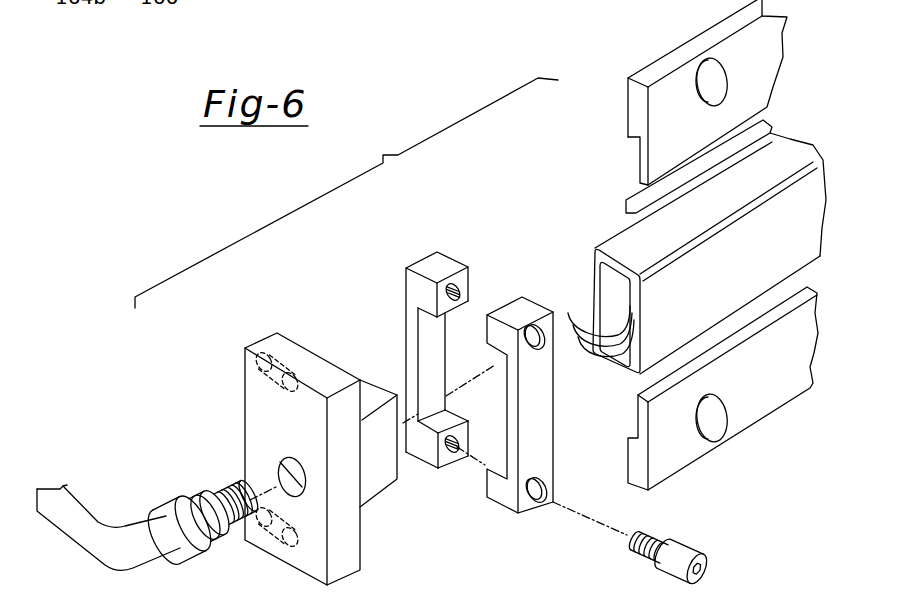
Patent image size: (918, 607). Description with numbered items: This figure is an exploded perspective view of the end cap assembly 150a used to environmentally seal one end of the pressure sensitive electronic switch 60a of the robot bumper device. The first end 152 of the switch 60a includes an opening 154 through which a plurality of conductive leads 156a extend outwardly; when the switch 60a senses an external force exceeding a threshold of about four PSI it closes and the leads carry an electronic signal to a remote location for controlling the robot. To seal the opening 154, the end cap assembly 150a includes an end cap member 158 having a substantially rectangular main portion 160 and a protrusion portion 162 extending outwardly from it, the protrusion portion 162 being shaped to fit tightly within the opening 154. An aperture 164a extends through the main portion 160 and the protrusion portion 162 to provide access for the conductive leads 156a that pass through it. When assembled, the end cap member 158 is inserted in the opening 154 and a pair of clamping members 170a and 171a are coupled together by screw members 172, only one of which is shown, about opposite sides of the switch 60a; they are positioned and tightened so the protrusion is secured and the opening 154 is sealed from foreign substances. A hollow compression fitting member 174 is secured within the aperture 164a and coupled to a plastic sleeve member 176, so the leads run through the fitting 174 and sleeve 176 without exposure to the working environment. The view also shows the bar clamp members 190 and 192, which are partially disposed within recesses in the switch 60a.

The switch 60a is at (600, 196).
The end cap assembly 150a is at (346, 193).
The first end 152 is at (587, 234).
The opening 154 is at (621, 348).
The conductive leads 156a is at (571, 318).
The end cap member 158 is at (273, 439).
The main portion 160 is at (292, 358).
The protrusion portion 162 is at (377, 397).
The aperture 164a is at (280, 468).
The clamping member 170a is at (444, 262).
The clamping member 171a is at (557, 288).
The screw member 172 is at (725, 513).
The compression fitting member 174 is at (203, 490).
The sleeve member 176 is at (85, 524).
The bar clamp member 190 is at (673, 58).
The bar clamp member 192 is at (752, 387).